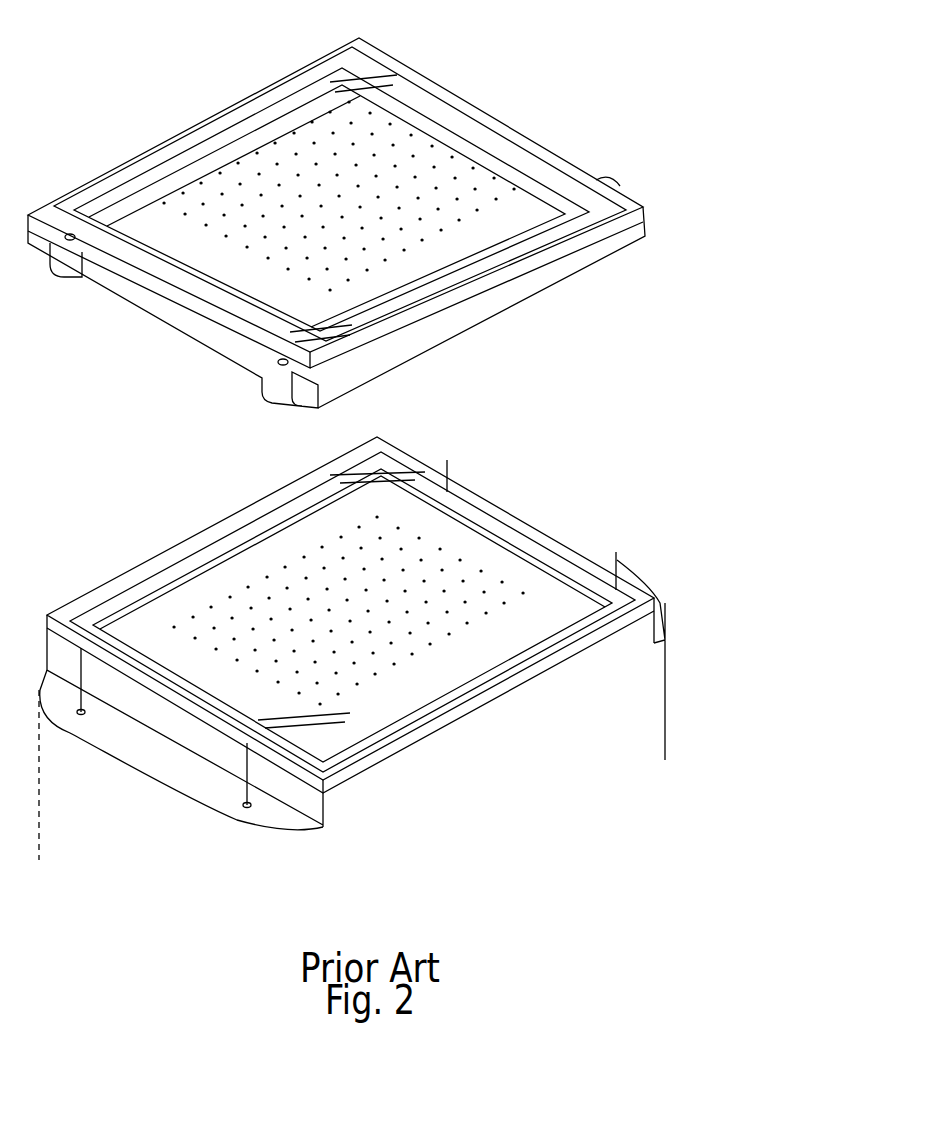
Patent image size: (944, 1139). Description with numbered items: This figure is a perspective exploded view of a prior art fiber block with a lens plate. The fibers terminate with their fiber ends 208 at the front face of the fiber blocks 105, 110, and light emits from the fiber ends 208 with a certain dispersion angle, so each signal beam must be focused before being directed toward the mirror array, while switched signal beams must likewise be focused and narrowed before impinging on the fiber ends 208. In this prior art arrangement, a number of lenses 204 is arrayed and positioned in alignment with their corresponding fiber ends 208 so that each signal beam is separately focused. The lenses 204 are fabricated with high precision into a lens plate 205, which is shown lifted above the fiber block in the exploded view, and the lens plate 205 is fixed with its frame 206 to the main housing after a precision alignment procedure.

The lenses 204 is at (287, 138).
The lens plate 205 is at (500, 120).
The frame 206 is at (560, 280).
The fiber ends 208 is at (452, 683).
The fiber block 105 is at (731, 230).
The fiber block 110 is at (630, 837).